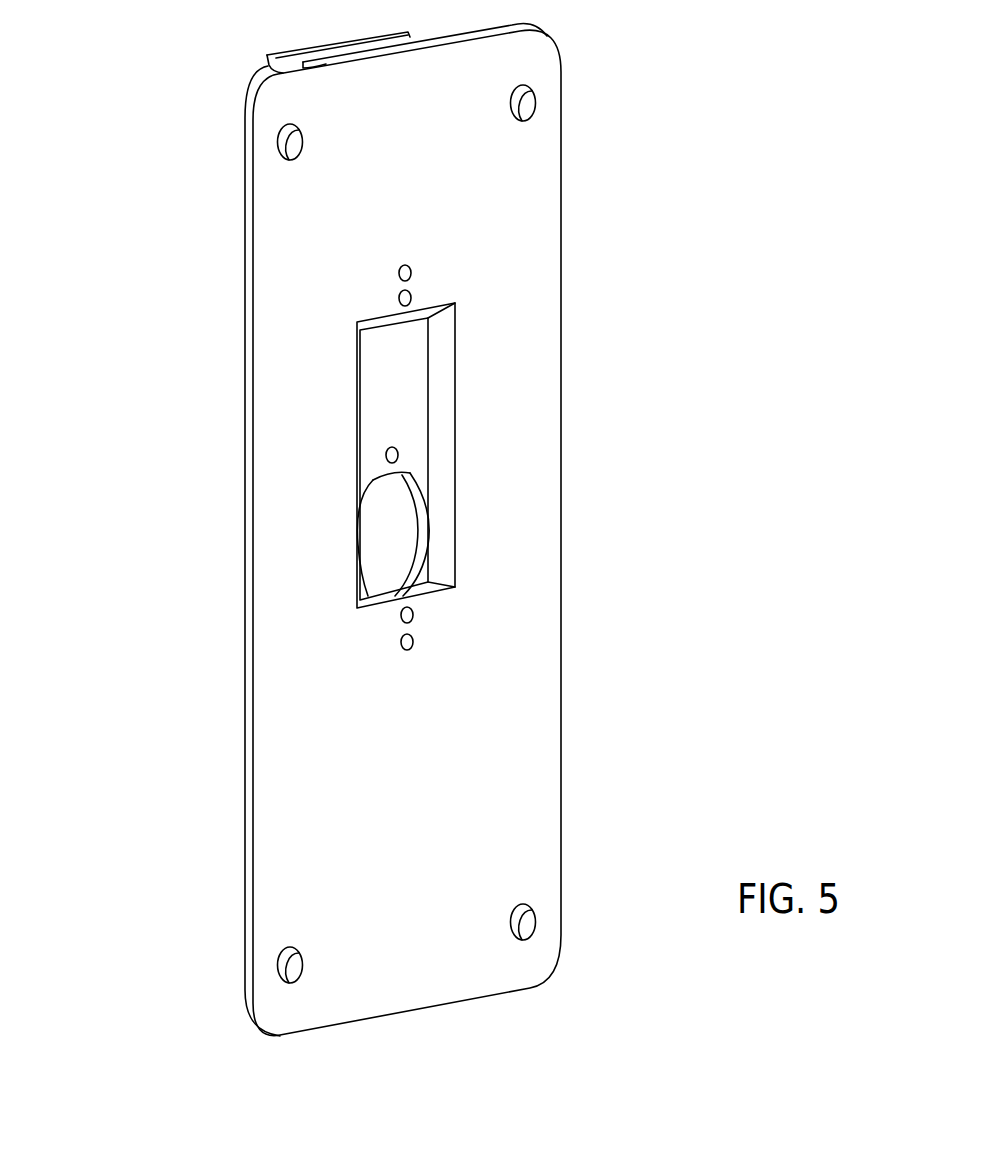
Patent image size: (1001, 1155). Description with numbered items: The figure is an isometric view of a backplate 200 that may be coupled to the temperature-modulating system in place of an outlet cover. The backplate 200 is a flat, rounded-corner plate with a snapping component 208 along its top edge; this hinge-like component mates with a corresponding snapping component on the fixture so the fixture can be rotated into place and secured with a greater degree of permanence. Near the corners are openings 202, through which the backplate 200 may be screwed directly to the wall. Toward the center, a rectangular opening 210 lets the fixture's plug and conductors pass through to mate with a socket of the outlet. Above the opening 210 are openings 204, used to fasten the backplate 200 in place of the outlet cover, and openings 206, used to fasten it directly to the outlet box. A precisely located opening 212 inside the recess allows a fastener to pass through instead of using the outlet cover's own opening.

The backplate 200 is at (553, 50).
The openings 202 is at (533, 117).
The openings 204 is at (411, 272).
The openings 206 is at (411, 297).
The snapping component 208 is at (270, 65).
The opening 210 is at (400, 528).
The opening 212 is at (398, 455).